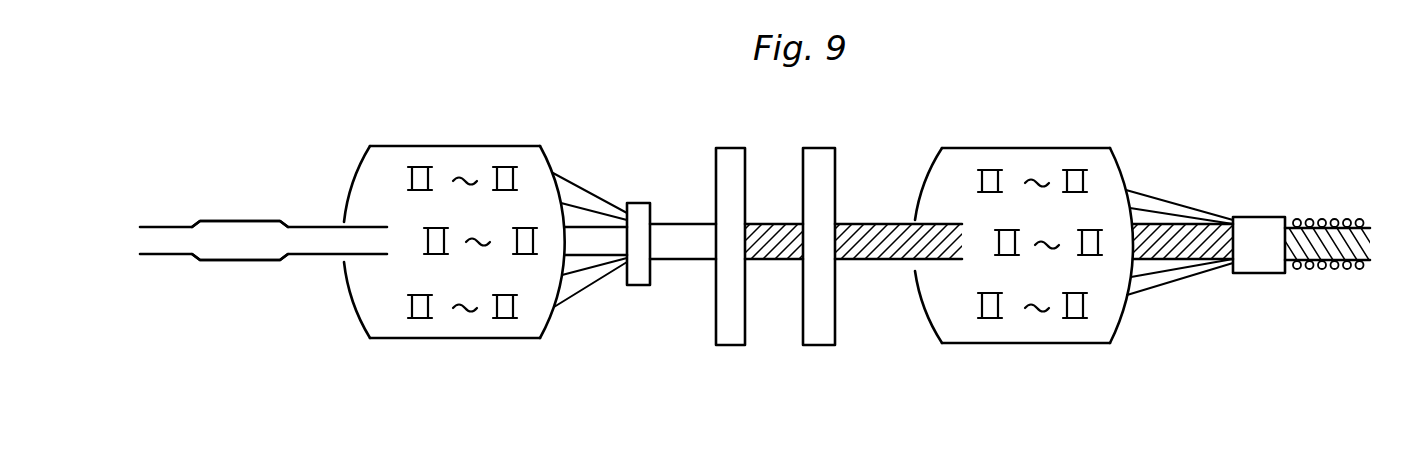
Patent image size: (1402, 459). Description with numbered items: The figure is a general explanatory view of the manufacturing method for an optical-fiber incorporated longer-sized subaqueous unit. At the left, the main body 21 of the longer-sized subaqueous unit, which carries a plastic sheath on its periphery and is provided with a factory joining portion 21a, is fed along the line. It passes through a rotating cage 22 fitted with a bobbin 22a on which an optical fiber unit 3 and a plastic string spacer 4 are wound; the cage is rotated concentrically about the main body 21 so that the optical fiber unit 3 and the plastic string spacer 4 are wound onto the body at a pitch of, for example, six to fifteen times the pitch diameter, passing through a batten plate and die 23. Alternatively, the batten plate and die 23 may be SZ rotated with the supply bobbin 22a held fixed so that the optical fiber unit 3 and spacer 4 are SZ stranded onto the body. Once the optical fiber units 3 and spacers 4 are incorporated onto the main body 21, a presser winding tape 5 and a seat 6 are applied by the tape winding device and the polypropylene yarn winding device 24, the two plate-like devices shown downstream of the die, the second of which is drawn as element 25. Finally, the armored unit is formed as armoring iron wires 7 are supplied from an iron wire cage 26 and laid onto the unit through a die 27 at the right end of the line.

The main body 21 is at (293, 228).
The factory joining portion 21a is at (245, 258).
The rotating cage 22 is at (457, 342).
The bobbin 22a is at (420, 166).
The optical fiber unit 3 is at (583, 188).
The plastic string spacer 4 is at (580, 272).
The batten plate and die 23 is at (637, 285).
The polypropylene yarn winding device 24 is at (718, 166).
The second plate 25 is at (830, 167).
The presser winding tape 5 is at (778, 260).
The seat 6 is at (878, 260).
The iron wire cage 26 is at (1067, 150).
The die 27 is at (1265, 217).
The armoring iron wires 7 is at (1320, 268).